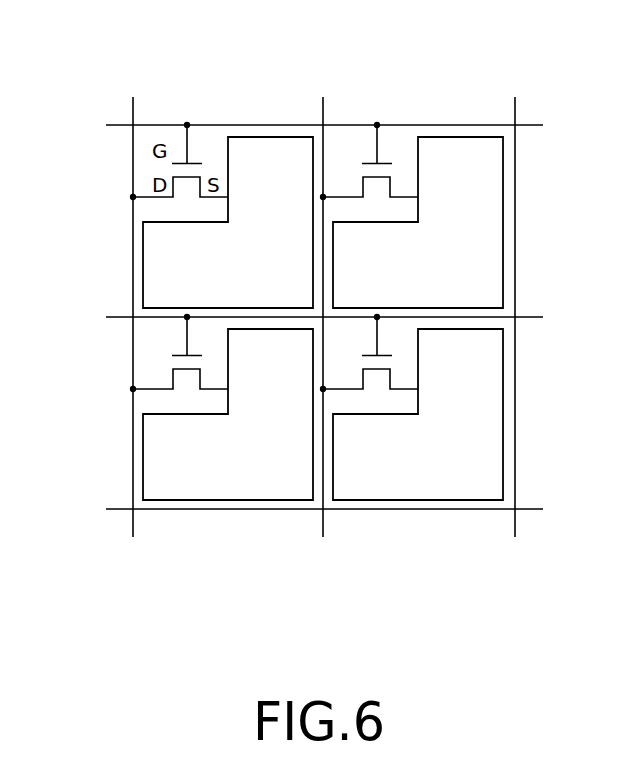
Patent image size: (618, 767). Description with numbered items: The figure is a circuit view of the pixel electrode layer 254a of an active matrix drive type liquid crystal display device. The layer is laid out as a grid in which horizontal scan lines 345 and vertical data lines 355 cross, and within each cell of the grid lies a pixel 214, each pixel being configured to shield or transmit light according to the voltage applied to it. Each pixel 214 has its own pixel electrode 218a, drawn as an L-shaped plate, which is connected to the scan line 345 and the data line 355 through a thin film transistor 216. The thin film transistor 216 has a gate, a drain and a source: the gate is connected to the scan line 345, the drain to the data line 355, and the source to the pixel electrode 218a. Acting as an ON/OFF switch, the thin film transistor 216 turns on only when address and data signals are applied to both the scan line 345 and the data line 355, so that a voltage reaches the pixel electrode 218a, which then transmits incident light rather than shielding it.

The pixel 214 is at (421, 125).
The thin film transistor 216 is at (203, 129).
The pixel electrode 218a is at (148, 268).
The pixel electrode layer 254a is at (526, 90).
The scan line 345 is at (120, 508).
The data line 355 is at (322, 523).